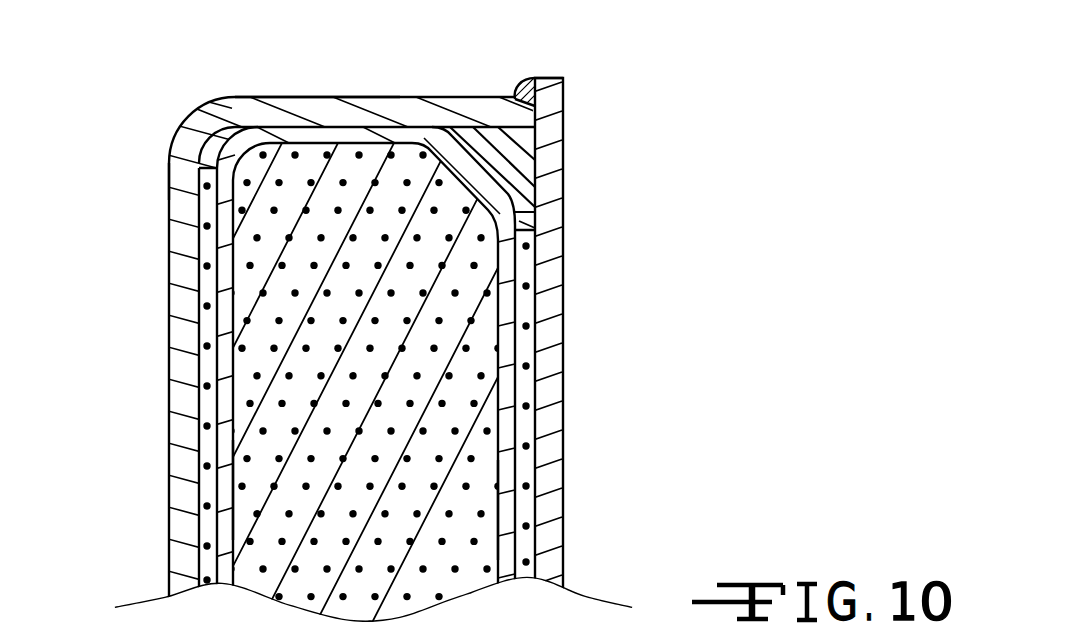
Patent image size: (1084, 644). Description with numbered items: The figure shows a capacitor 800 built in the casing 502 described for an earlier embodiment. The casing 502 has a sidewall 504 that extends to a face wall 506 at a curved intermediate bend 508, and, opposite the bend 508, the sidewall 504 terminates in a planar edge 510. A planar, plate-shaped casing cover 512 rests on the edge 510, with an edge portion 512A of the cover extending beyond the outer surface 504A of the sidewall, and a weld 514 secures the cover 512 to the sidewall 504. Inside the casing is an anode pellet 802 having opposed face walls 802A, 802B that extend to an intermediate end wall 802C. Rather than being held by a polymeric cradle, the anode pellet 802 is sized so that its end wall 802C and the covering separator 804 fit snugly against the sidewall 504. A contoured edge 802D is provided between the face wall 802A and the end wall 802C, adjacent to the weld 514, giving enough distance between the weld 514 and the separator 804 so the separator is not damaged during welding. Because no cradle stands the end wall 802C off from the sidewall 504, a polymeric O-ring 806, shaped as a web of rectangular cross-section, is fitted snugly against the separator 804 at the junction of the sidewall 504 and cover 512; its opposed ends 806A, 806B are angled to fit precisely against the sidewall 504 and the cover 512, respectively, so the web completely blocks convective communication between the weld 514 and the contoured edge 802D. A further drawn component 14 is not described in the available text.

The adhesive layer 14 is at (205, 257).
The casing 502 is at (156, 165).
The sidewall 504 is at (368, 97).
The outer surface of the sidewall 504A is at (236, 94).
The face wall 506 is at (175, 384).
The curved intermediate bend 508 is at (185, 122).
The planar edge 510 is at (538, 113).
The casing cover 512 is at (566, 287).
The edge portion of the cover 512A is at (564, 78).
The weld 514 is at (530, 79).
The capacitor 800 is at (720, 196).
The anode pellet 802 is at (455, 378).
The face wall 802A is at (505, 514).
The face wall 802B is at (232, 487).
The end wall 802C is at (330, 142).
The contoured edge 802D is at (537, 220).
The separator 804 is at (513, 448).
The polymeric O-ring 806 is at (507, 160).
The end of the O-ring 806A is at (451, 128).
The end of the O-ring 806B is at (535, 198).